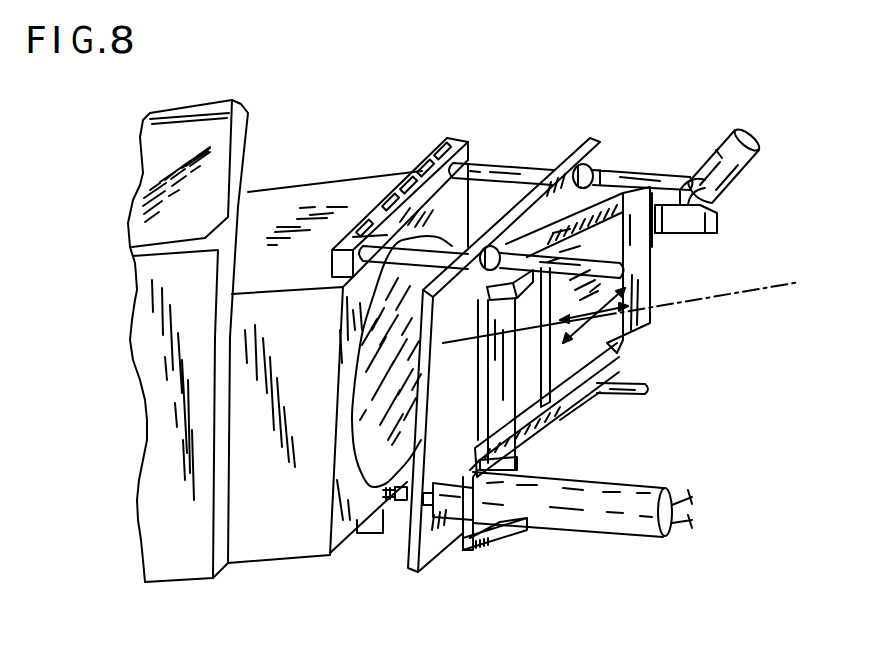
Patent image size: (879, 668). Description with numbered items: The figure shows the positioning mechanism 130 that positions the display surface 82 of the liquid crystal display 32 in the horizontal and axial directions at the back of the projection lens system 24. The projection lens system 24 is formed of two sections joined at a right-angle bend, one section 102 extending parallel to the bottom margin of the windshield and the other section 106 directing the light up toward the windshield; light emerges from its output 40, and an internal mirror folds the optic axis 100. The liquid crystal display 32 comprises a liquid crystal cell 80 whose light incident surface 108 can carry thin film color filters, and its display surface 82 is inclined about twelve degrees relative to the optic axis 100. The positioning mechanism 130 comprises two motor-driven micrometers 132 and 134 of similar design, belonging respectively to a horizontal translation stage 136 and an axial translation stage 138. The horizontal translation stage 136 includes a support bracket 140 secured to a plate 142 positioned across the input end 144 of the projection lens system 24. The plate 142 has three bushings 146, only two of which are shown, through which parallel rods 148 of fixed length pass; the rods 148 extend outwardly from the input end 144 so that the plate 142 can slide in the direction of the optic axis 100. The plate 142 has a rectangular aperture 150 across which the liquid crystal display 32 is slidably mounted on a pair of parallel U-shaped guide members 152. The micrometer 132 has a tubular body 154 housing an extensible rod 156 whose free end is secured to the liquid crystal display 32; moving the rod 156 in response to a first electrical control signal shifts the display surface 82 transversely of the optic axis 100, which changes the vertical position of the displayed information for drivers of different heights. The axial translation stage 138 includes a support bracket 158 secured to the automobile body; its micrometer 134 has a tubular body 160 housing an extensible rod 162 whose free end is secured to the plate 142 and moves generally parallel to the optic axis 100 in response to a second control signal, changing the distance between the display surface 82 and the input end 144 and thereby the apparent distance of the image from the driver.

The projection lens system 24 is at (250, 99).
The output 40 is at (168, 128).
The other section 106 is at (192, 570).
The one section 102 is at (279, 553).
The input end 144 is at (330, 490).
The plate 142 is at (419, 440).
The parallel rods 148 is at (493, 163).
The bushings 146 is at (600, 170).
The extensible rod 156 is at (667, 176).
The axial translation stage 138 is at (440, 550).
The positioning mechanism 130 is at (392, 573).
The horizontal translation stage 136 is at (657, 277).
The liquid crystal display 32 is at (637, 337).
The support bracket 140 is at (717, 220).
The motor-driven micrometer 132 is at (760, 137).
The tubular body 154 is at (718, 150).
The optic axis 100 is at (770, 280).
The U-shaped guide members 152 is at (490, 296).
The rectangular aperture 150 is at (488, 375).
The display surface 82 is at (538, 340).
The light incident surface 108 is at (560, 415).
The liquid crystal cell 80 is at (553, 388).
The motor-driven micrometer 134 is at (587, 530).
The tubular body 160 is at (635, 490).
The extensible rod 162 is at (432, 527).
The support bracket 158 is at (487, 553).